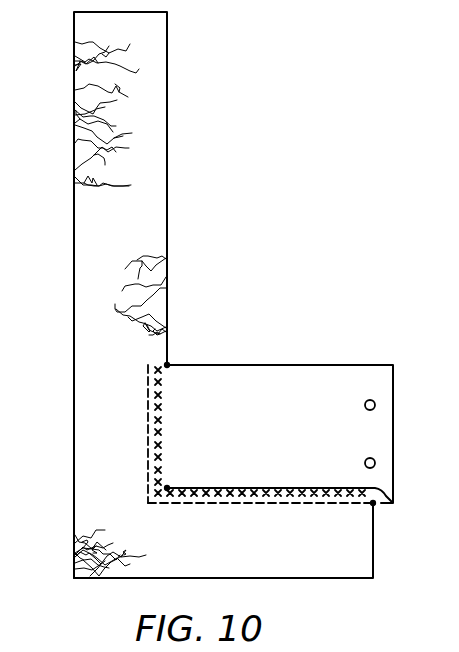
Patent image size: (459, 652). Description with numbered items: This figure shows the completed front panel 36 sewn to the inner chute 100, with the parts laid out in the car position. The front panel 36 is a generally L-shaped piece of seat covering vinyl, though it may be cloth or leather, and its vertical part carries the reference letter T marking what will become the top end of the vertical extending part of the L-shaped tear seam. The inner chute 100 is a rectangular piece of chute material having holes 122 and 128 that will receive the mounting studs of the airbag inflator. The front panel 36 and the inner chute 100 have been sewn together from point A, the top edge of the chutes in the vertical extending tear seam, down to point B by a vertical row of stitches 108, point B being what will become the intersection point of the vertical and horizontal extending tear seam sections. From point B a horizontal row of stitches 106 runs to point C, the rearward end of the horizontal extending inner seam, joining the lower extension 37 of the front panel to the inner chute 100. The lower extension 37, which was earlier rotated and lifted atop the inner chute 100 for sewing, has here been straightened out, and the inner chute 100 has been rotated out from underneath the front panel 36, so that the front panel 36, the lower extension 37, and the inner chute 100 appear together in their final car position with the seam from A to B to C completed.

The front panel 36 is at (136, 161).
The top end of the vertical extending part of the L-shaped tear seam T is at (170, 208).
The lower extension 37 is at (323, 538).
The inner chute 100 is at (258, 386).
The stitches 108 is at (150, 445).
The horizontal row of stitches 106 is at (223, 490).
The hole 128 is at (375, 400).
The hole 122 is at (375, 470).
The top edge of the chutes in the vertical extending tear seam A is at (168, 364).
The intersection point of the vertical and horizontal extending tear seam sections B is at (165, 490).
The rearward end of the horizontal extending inner seam C is at (377, 505).